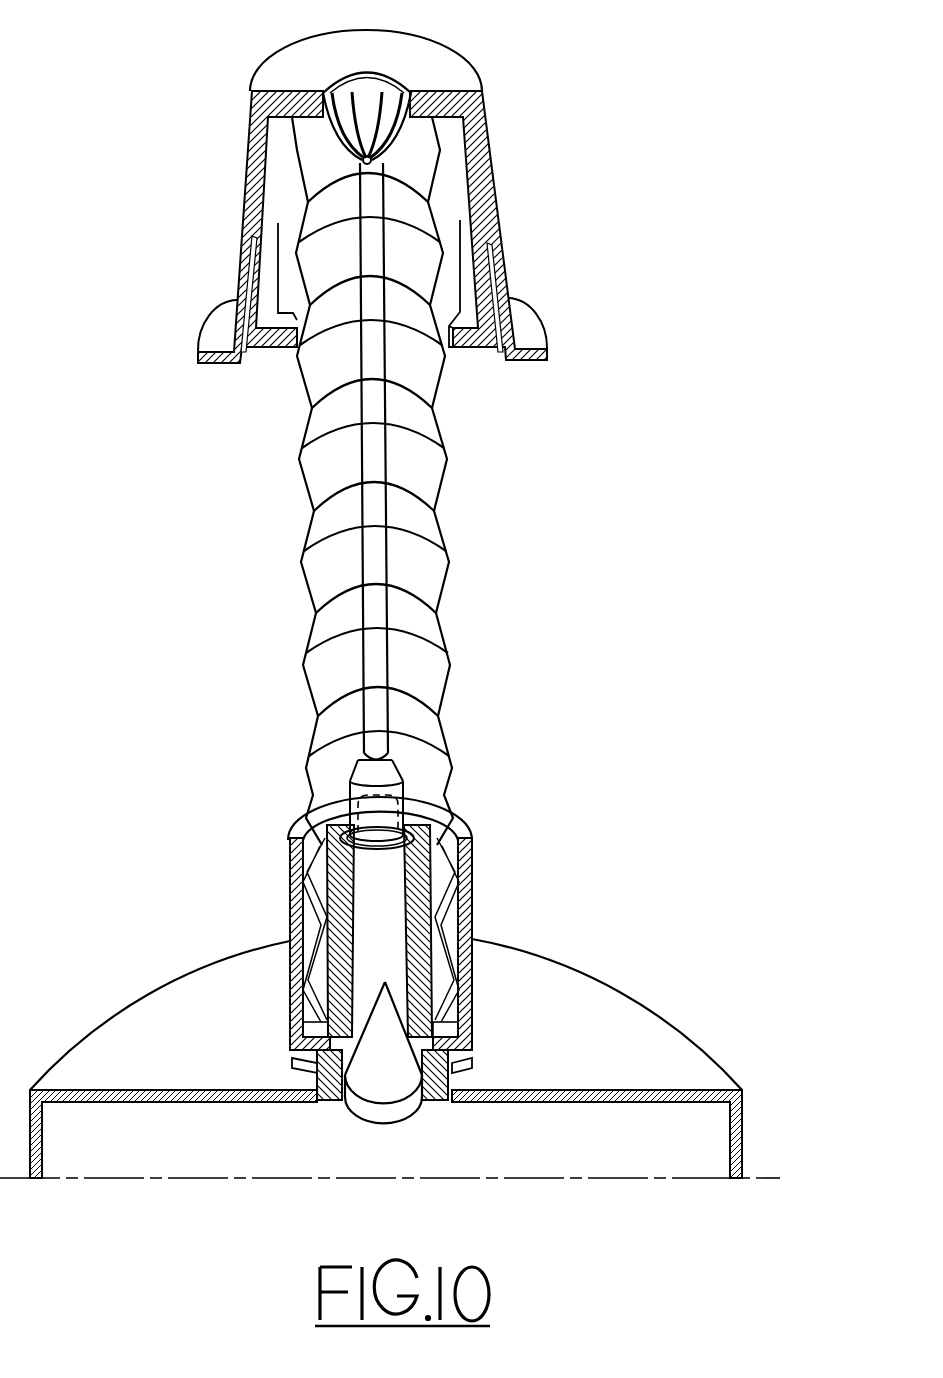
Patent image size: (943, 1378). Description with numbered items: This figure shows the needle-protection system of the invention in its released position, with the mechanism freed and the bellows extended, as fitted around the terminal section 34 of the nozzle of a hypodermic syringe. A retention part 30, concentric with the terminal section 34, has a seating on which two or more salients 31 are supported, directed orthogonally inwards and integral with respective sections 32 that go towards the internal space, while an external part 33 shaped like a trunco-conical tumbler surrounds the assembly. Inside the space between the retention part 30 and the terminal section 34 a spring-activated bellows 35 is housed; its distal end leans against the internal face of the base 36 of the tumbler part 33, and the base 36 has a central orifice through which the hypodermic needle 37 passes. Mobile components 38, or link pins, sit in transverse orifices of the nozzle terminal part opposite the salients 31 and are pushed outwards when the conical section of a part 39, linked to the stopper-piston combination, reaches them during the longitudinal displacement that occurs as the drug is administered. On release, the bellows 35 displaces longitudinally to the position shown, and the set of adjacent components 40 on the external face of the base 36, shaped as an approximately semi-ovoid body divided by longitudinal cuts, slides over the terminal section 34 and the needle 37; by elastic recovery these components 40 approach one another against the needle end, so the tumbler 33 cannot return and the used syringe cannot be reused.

The retention part 30 is at (472, 860).
The salients 31 is at (277, 346).
The sections 32 is at (225, 308).
The external tumbler part 33 is at (252, 207).
The terminal section of the syringe nozzle 34 is at (430, 952).
The bellows 35 is at (335, 617).
The base 36 is at (437, 62).
The hypodermic needle 37 is at (377, 503).
The mobile components 38 is at (310, 1067).
The conical part 39 is at (368, 1112).
The adjacent components 40 is at (330, 140).